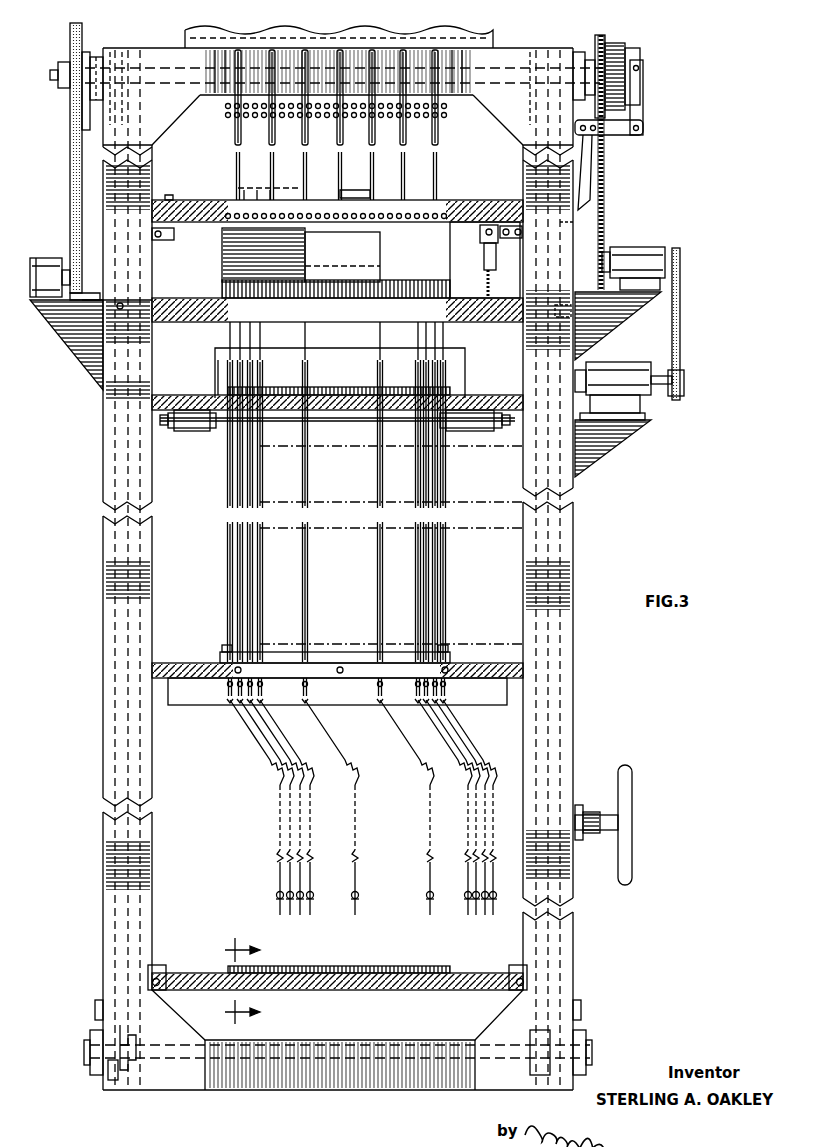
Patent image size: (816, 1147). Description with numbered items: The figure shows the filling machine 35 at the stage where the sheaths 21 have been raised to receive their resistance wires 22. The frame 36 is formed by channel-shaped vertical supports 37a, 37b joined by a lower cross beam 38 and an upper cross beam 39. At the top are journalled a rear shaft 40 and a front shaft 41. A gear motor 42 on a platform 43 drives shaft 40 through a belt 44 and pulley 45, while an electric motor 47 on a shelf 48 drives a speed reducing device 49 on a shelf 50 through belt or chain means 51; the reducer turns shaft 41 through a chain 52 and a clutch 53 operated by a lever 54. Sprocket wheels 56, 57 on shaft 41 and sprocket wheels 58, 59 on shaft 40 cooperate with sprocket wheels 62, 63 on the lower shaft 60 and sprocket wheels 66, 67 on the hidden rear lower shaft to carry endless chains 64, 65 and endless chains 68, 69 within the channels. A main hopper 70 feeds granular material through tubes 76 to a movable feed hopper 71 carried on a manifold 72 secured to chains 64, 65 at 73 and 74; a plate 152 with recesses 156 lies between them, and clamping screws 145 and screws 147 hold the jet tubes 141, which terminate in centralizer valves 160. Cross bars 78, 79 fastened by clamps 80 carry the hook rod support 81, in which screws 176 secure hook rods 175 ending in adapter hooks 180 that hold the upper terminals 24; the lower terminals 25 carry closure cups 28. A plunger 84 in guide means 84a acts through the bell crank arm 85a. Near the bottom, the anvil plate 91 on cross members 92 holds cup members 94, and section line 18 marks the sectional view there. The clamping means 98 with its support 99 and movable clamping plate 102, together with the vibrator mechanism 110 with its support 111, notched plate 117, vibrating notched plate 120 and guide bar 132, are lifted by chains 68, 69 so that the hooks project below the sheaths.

The section line 18 is at (244, 982).
The tubular sheath 21 is at (413, 494).
The resistance wire 22 is at (452, 760).
The terminal 24 is at (240, 726).
The terminal 25 is at (434, 871).
The closure cup 28 is at (450, 893).
The filling machine 35 is at (332, 1134).
The frame 36 is at (103, 832).
The vertical support 37a is at (573, 642).
The vertical support 37b is at (103, 600).
The cross beam 38 is at (268, 1094).
The cross beam 39 is at (356, 96).
The shaft 40 is at (88, 52).
The shaft 41 is at (580, 52).
The gear motor 42 is at (55, 248).
The platform 43 is at (68, 348).
The belt 44 is at (71, 177).
The pulley 45 is at (70, 54).
The electric motor 47 is at (652, 365).
The shelf 48 is at (610, 452).
The speed reducing device 49 is at (642, 254).
The shelf 50 is at (602, 320).
The belt or chain means 51 is at (679, 300).
The chain 52 is at (605, 210).
The clutch 53 is at (634, 54).
The lever 54 is at (602, 178).
The sprocket wheel 56 is at (106, 52).
The sprocket wheel 57 is at (555, 52).
The sprocket wheel 58 is at (130, 56).
The sprocket wheel 59 is at (530, 52).
The shaft 60 is at (399, 1038).
The sprocket wheel 62 is at (102, 1093).
The sprocket wheel 63 is at (564, 1090).
The endless chain 64 is at (102, 523).
The endless chain 65 is at (573, 542).
The sprocket wheel 66 is at (154, 1092).
The sprocket wheel 67 is at (528, 1090).
The endless chain 68 is at (148, 490).
The endless chain 69 is at (524, 490).
The hopper 70 is at (195, 46).
The feed hopper 71 is at (346, 262).
The manifold 72 is at (188, 310).
The chain connection 73 is at (67, 298).
The chain connection 74 is at (571, 316).
The tubes 76 is at (372, 132).
The cross bar 78 is at (168, 230).
The cross bar 79 is at (573, 224).
The clamp 80 is at (517, 250).
The hook rod support 81 is at (182, 204).
The plunger 84 is at (486, 287).
The guide means 84a is at (476, 276).
The bell crank arm 85a is at (496, 234).
The anvil plate 91 is at (367, 990).
The cross members 92 is at (516, 968).
The cup members 94 is at (370, 969).
The clamping means 98 is at (467, 650).
The support 99 is at (498, 686).
The movable clamping plate 102 is at (280, 663).
The vibrator mechanism 110 is at (210, 385).
The support 111 is at (512, 391).
The notched plate 117 is at (326, 395).
The notched plate 120 is at (286, 422).
The guide bar 132 is at (360, 356).
The jet tube 141 is at (228, 684).
The clamping screws 145 is at (225, 306).
The screws 147 is at (227, 316).
The plate 152 is at (344, 280).
The recesses 156 is at (290, 286).
The centralizer valve 160 is at (226, 690).
The hook rods 175 is at (435, 266).
The screws 176 is at (224, 212).
The adapter hook 180 is at (232, 690).